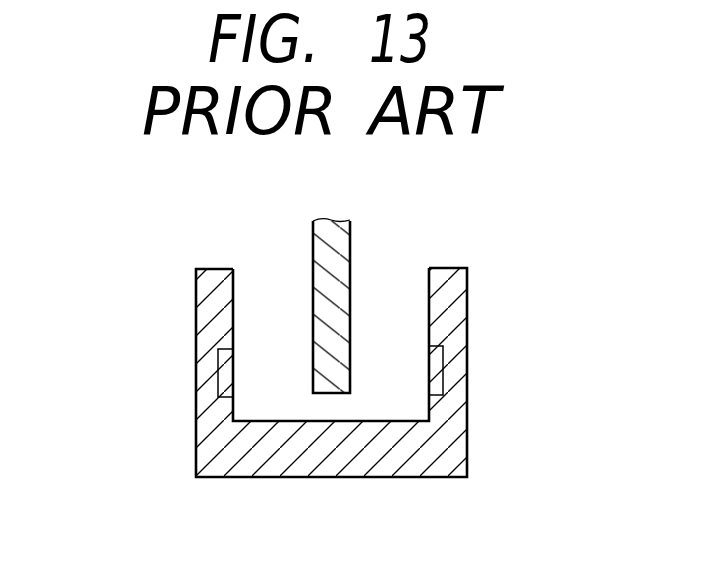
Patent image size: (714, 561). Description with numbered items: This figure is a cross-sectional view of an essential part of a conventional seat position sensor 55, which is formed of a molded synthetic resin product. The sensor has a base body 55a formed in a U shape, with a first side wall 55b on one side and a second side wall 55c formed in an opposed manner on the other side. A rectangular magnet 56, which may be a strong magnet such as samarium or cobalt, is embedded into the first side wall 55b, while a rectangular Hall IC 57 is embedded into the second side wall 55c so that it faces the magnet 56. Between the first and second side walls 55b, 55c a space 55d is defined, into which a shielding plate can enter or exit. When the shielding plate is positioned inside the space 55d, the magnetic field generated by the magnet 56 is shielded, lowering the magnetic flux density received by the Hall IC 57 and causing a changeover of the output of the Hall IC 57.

The seat position sensor 55 is at (333, 318).
The base body 55a is at (467, 292).
The first side wall 55b is at (196, 380).
The second side wall 55c is at (467, 395).
The space 55d is at (378, 322).
The magnet 56 is at (233, 360).
The Hall IC 57 is at (443, 365).